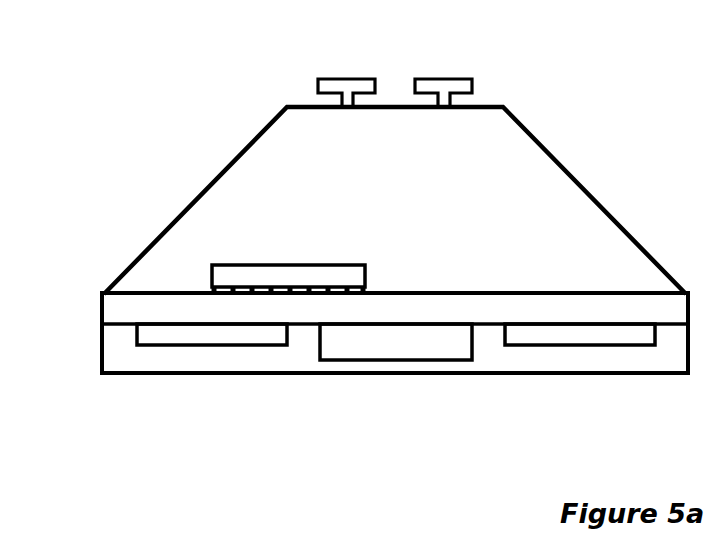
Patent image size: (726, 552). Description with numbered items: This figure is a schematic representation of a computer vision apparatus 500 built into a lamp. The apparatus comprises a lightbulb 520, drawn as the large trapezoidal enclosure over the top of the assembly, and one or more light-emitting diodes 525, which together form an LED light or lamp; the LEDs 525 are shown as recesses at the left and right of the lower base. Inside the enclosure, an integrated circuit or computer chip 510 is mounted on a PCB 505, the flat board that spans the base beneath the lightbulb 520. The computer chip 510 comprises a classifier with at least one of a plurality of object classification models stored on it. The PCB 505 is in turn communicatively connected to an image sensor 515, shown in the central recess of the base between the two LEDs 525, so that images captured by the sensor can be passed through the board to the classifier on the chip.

The computer vision apparatus 500 is at (76, 92).
The PCB 505 is at (503, 293).
The computer chip 510 is at (285, 263).
The image sensor 515 is at (320, 346).
The lightbulb 520 is at (585, 189).
The light-emitting diodes 525 is at (188, 345).